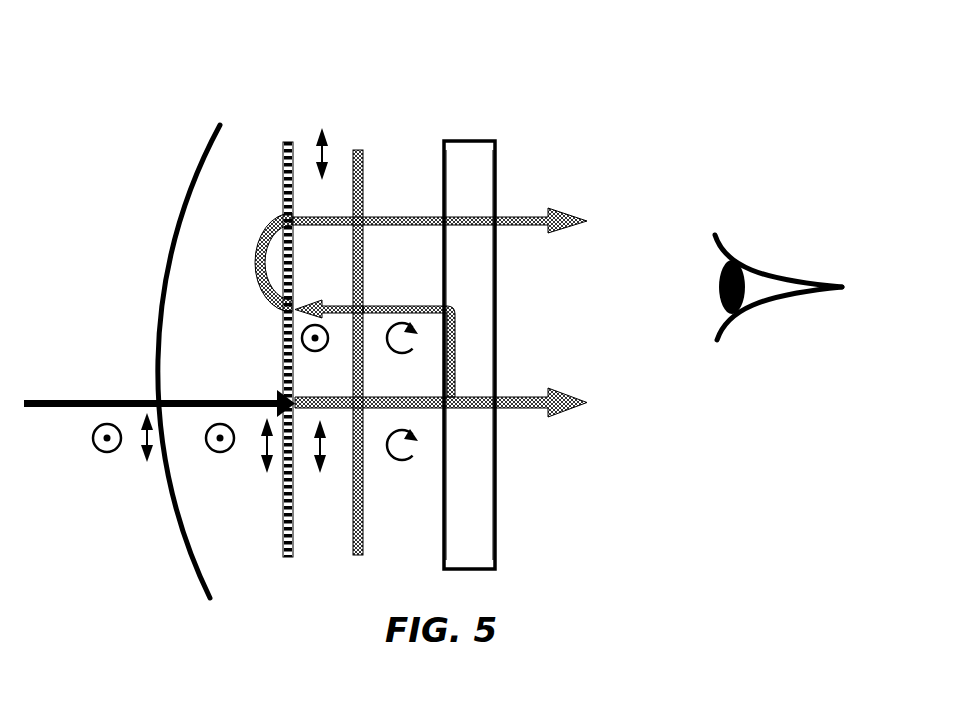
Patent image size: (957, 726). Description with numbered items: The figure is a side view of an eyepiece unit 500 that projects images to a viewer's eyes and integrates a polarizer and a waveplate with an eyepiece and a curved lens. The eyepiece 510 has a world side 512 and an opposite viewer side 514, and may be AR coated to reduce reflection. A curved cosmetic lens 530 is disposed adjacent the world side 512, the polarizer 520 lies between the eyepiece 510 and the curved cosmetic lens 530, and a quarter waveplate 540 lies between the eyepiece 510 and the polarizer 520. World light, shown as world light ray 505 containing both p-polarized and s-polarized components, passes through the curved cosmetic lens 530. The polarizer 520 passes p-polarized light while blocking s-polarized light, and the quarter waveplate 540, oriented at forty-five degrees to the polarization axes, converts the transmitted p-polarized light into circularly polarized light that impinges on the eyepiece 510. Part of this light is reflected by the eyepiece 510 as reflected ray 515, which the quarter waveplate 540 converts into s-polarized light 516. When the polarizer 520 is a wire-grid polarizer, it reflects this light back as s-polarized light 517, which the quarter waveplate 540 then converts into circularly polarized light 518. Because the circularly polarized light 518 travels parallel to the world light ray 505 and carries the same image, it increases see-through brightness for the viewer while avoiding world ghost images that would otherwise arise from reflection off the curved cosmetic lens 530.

The eyepiece unit 500 is at (679, 60).
The world light ray 505 is at (132, 398).
The eyepiece 510 is at (495, 553).
The world side 512 is at (445, 515).
The viewer side 514 is at (497, 463).
The reflected ray 515 is at (367, 303).
The s-polarized light 516 is at (338, 307).
The s-polarized light 517 is at (318, 224).
The circularly polarized light 518 is at (378, 217).
The polarizer 520 is at (282, 340).
The curved cosmetic lens 530 is at (183, 553).
The quarter waveplate 540 is at (360, 150).